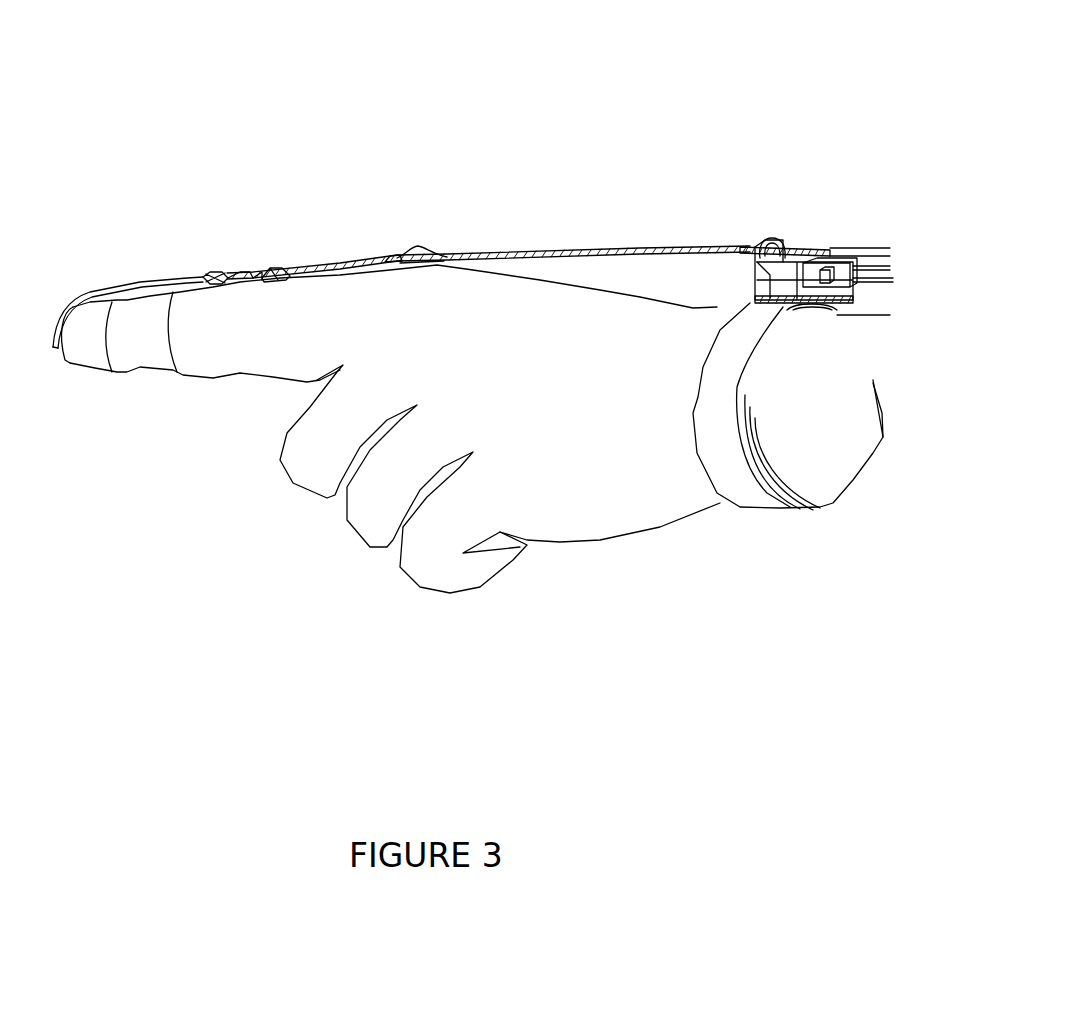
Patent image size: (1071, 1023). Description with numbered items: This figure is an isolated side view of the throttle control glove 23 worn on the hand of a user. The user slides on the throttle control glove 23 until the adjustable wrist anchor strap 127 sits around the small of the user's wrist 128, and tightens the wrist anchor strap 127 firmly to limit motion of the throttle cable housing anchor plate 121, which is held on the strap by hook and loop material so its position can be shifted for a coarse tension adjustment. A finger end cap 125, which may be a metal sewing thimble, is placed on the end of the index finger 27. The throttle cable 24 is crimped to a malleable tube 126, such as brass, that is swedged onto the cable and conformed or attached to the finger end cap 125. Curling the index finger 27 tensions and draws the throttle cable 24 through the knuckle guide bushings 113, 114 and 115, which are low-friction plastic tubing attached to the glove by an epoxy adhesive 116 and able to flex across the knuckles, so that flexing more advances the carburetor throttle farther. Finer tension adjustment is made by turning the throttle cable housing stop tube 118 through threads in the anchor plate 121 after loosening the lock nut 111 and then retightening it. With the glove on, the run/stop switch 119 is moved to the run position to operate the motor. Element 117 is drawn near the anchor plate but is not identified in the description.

The throttle control glove 23 is at (600, 540).
The throttle cable 24 is at (628, 248).
The index finger 27 is at (147, 372).
The lock nut 111 is at (773, 240).
The knuckle guide bushing 113 is at (210, 277).
The knuckle guide bushing 114 is at (254, 273).
The knuckle guide bushing 115 is at (397, 257).
The epoxy adhesive 116 is at (207, 277).
The base plate 117 is at (750, 298).
The throttle cable housing stop tube 118 is at (795, 245).
The run/stop switch 119 is at (837, 258).
The throttle cable housing anchor plate 121 is at (750, 270).
The finger end cap 125 is at (90, 368).
The malleable tube 126 is at (90, 267).
The adjustable wrist anchor strap 127 is at (753, 510).
The user's wrist 128 is at (830, 510).